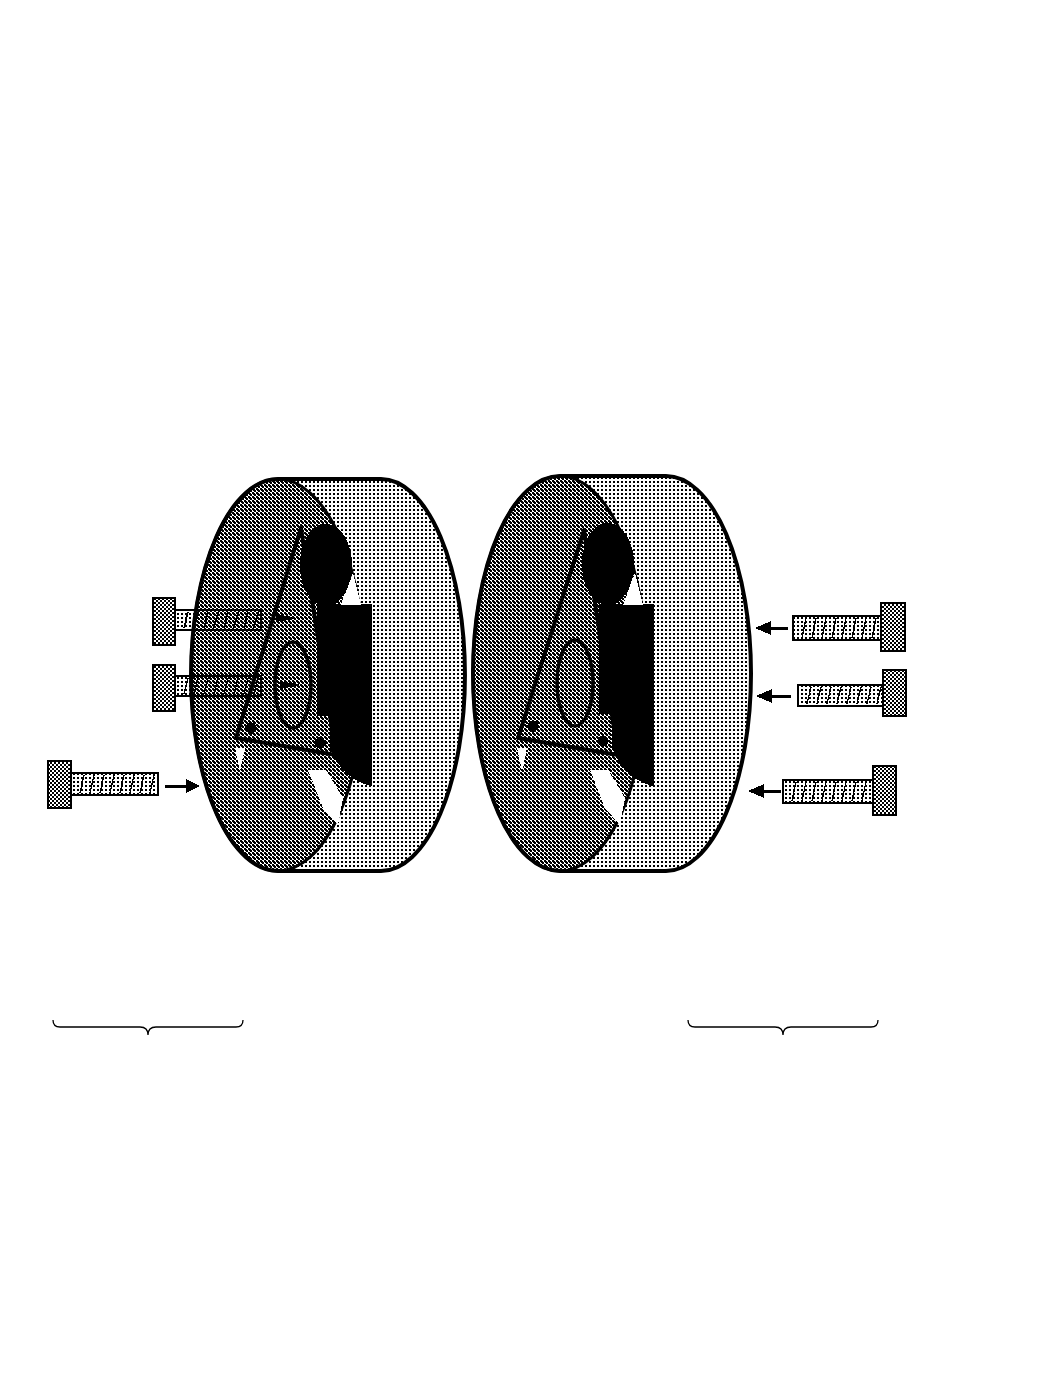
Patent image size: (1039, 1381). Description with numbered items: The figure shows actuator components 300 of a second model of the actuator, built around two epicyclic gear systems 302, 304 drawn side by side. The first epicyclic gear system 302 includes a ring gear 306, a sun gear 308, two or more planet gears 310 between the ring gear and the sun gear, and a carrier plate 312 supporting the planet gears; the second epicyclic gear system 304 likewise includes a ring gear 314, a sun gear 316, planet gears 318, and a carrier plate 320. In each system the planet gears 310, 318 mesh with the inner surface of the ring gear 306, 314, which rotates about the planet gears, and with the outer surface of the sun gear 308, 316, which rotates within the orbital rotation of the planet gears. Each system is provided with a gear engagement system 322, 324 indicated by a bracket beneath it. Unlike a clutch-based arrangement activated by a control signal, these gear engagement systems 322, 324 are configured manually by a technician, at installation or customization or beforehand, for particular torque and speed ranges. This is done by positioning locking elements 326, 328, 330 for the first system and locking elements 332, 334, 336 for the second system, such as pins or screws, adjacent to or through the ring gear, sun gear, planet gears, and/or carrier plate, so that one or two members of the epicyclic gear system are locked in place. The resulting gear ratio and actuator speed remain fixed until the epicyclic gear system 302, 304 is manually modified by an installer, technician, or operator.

The actuator components 300 is at (127, 60).
The first epicyclic gear system 302 is at (365, 418).
The second epicyclic gear system 304 is at (672, 418).
The ring gear 306 is at (342, 498).
The sun gear 308 is at (358, 730).
The planet gears 310 is at (294, 516).
The carrier plate 312 is at (252, 520).
The ring gear 314 is at (650, 498).
The sun gear 316 is at (645, 712).
The planet gears 318 is at (545, 475).
The carrier plate 320 is at (547, 570).
The gear engagement system 322 is at (499, 849).
The gear engagement system 324 is at (698, 734).
The locking element 326 is at (132, 790).
The locking element 328 is at (178, 698).
The locking element 330 is at (199, 601).
The locking element 332 is at (847, 797).
The locking element 334 is at (862, 700).
The locking element 336 is at (846, 606).